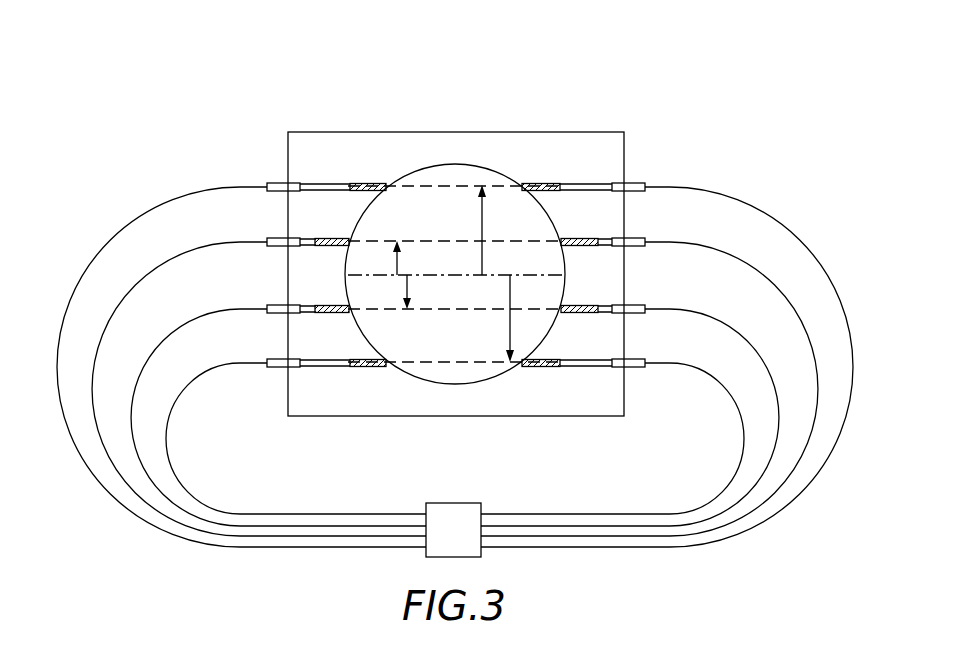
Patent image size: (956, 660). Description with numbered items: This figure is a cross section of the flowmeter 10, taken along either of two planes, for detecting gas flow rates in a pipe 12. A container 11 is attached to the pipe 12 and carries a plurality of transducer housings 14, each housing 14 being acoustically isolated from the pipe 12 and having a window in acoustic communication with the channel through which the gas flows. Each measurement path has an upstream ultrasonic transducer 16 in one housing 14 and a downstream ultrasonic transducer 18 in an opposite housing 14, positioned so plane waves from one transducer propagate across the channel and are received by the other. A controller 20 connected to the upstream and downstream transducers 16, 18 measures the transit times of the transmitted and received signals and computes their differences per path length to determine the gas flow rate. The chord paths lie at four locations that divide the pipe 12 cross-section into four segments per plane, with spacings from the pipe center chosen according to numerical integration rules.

The flowmeter 10 is at (490, 157).
The container 11 is at (603, 110).
The pipe 12 is at (387, 163).
The transducer housing 14 is at (276, 176).
The upstream ultrasonic transducer 16 is at (308, 228).
The downstream ultrasonic transducer 18 is at (599, 230).
The controller 20 is at (468, 491).